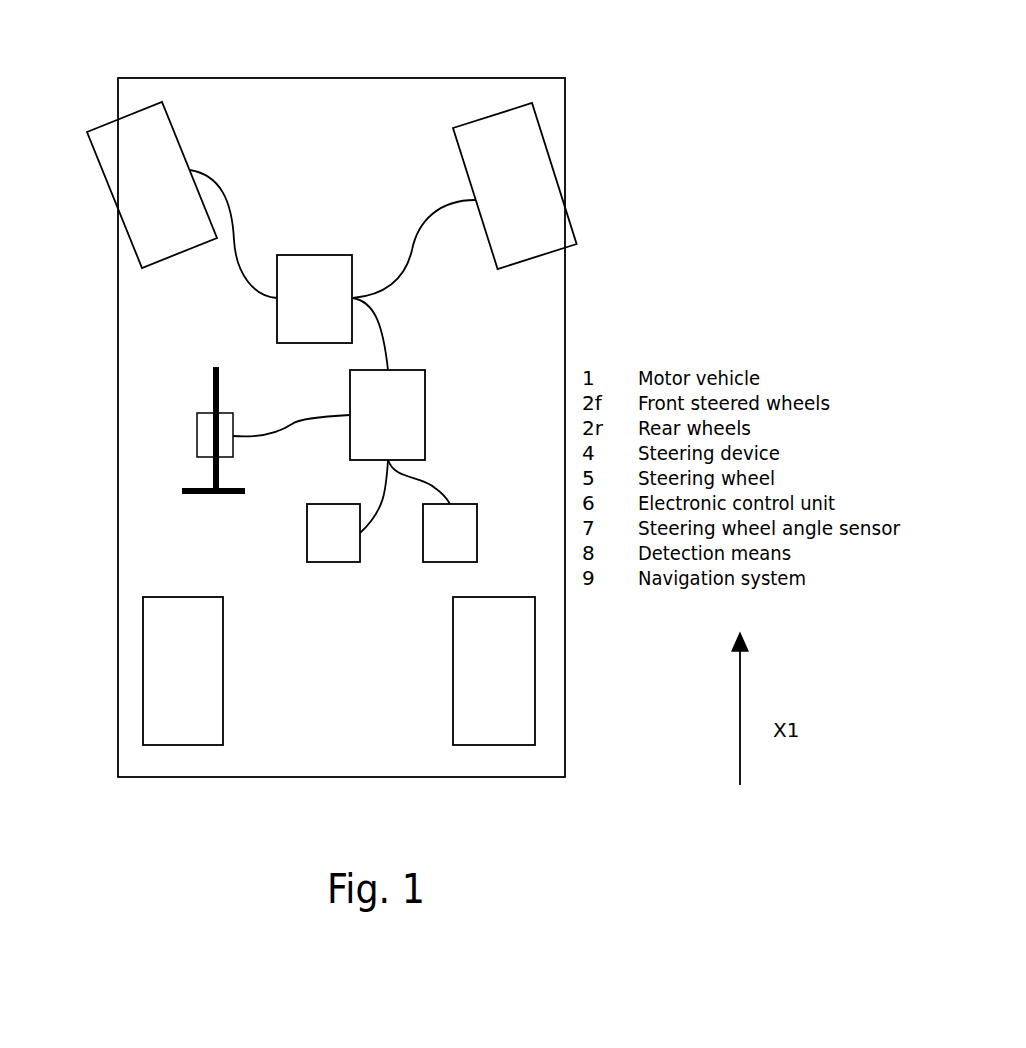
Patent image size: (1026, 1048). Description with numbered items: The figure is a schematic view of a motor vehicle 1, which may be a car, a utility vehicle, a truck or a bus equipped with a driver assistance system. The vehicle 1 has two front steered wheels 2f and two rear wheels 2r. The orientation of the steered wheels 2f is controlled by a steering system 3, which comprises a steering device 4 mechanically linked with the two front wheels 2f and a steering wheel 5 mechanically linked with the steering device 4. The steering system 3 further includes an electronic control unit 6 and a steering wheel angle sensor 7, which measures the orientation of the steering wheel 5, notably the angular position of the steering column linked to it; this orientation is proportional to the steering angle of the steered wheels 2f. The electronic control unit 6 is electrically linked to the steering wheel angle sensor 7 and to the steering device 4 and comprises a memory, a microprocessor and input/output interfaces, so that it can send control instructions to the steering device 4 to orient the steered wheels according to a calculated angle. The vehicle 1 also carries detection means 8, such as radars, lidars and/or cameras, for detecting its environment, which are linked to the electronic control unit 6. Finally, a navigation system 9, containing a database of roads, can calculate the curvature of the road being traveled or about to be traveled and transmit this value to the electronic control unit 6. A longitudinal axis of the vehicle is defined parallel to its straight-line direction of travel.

The motor vehicle 1 is at (597, 117).
The front steered wheels 2f is at (332, 185).
The rear wheels 2r is at (339, 671).
The steering system 3 is at (528, 340).
The steering device 4 is at (332, 270).
The steering wheel 5 is at (200, 496).
The electronic control unit 6 is at (341, 451).
The steering wheel angle sensor 7 is at (196, 432).
The detection means 8 is at (333, 533).
The navigation system 9 is at (450, 533).